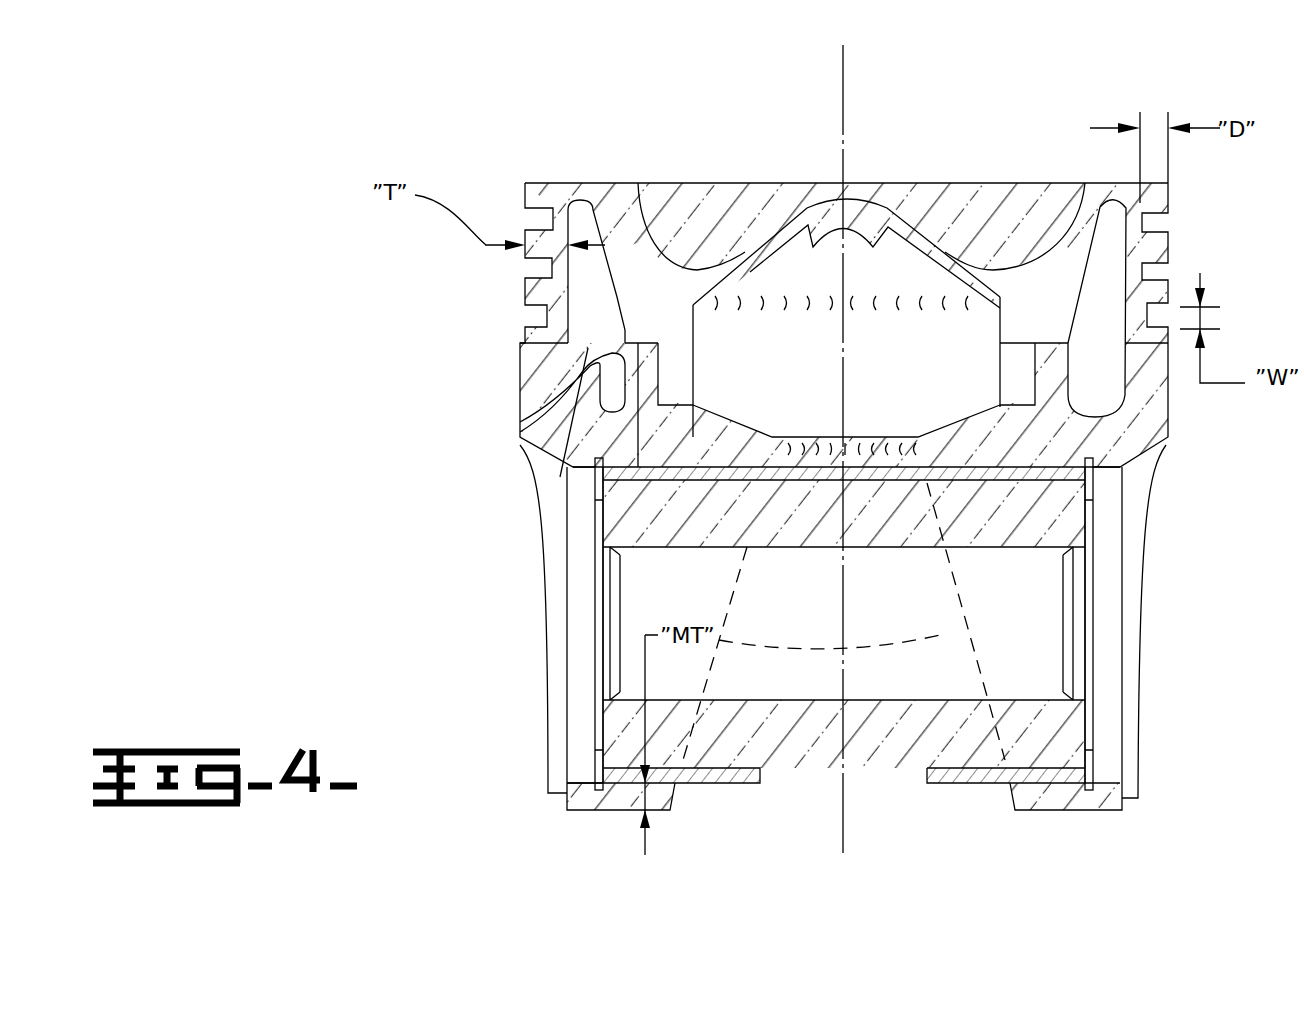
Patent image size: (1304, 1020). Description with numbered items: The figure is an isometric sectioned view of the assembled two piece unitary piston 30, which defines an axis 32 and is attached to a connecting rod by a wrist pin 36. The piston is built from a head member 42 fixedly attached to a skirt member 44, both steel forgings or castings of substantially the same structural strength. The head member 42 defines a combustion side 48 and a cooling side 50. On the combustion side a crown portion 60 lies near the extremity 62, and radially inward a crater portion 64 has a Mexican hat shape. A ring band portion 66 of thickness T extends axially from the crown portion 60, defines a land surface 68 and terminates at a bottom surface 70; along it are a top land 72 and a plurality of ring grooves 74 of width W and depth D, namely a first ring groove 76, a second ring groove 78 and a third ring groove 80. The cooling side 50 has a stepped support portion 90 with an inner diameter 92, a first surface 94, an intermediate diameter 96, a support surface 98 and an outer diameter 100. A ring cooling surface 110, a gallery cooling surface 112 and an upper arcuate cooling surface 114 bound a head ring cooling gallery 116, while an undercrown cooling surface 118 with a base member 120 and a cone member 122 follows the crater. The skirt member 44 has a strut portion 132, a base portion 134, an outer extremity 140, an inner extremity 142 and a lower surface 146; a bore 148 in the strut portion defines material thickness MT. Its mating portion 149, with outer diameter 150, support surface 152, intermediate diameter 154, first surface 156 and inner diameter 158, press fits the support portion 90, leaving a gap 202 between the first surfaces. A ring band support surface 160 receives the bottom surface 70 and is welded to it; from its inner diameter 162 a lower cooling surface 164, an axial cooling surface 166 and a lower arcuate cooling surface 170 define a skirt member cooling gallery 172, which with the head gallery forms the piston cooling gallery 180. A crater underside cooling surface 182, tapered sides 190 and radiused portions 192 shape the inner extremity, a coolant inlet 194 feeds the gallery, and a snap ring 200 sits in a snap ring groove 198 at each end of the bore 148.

The two piece unitary piston 30 is at (303, 112).
The axis 32 is at (843, 830).
The wrist pin 36 is at (1075, 590).
The head member 42 is at (1085, 183).
The skirt member 44 is at (605, 812).
The combustion side 48 is at (743, 253).
The cooling side 50 is at (762, 268).
The crown portion 60 is at (558, 183).
The extremity 62 is at (527, 195).
The crater portion 64 is at (677, 218).
The ring band portion 66 is at (497, 150).
The land surface 68 is at (318, 351).
The bottom surface 70 is at (540, 377).
The top land 72 is at (1170, 205).
The plurality of ring grooves 74 is at (1162, 274).
The first ring groove 76 is at (540, 218).
The second ring groove 78 is at (540, 273).
The third ring groove 80 is at (540, 318).
The support portion 90 is at (672, 296).
The inner diameter 92 is at (700, 378).
The first surface 94 is at (638, 400).
The intermediate diameter 96 is at (622, 405).
The support surface 98 is at (612, 415).
The outer diameter 100 is at (540, 302).
The ring cooling surface 110 is at (627, 256).
The gallery cooling surface 112 is at (540, 281).
The upper arcuate cooling surface 114 is at (580, 207).
The head ring cooling gallery 116 is at (612, 305).
The undercrown cooling surface 118 is at (918, 252).
The base member 120 is at (978, 275).
The cone member 122 is at (932, 250).
The strut portion 132 is at (567, 800).
The base portion 134 is at (540, 410).
The outer extremity 140 is at (545, 397).
The inner extremity 142 is at (795, 455).
The lower surface 146 is at (645, 812).
The bore 148 is at (669, 779).
The mating portion 149 is at (805, 357).
The outer diameter 150 is at (560, 440).
The support surface 152 is at (695, 325).
The intermediate diameter 154 is at (695, 357).
The first surface 156 is at (695, 395).
The inner diameter 158 is at (745, 428).
The ring band support surface 160 is at (540, 328).
The inner diameter 162 is at (555, 425).
The lower cooling surface 164 is at (585, 455).
The axial cooling surface 166 is at (600, 475).
The lower arcuate cooling surface 170 is at (603, 485).
The skirt member cooling gallery 172 is at (613, 346).
The piston cooling gallery 180 is at (1120, 339).
The crater underside cooling surface 182 is at (778, 442).
The tapered sides 190 is at (844, 621).
The radiused portion 192 is at (925, 455).
The coolant inlet 194 is at (965, 292).
The snap ring groove 198 is at (595, 775).
The snap ring 200 is at (598, 688).
The gap 202 is at (1000, 400).